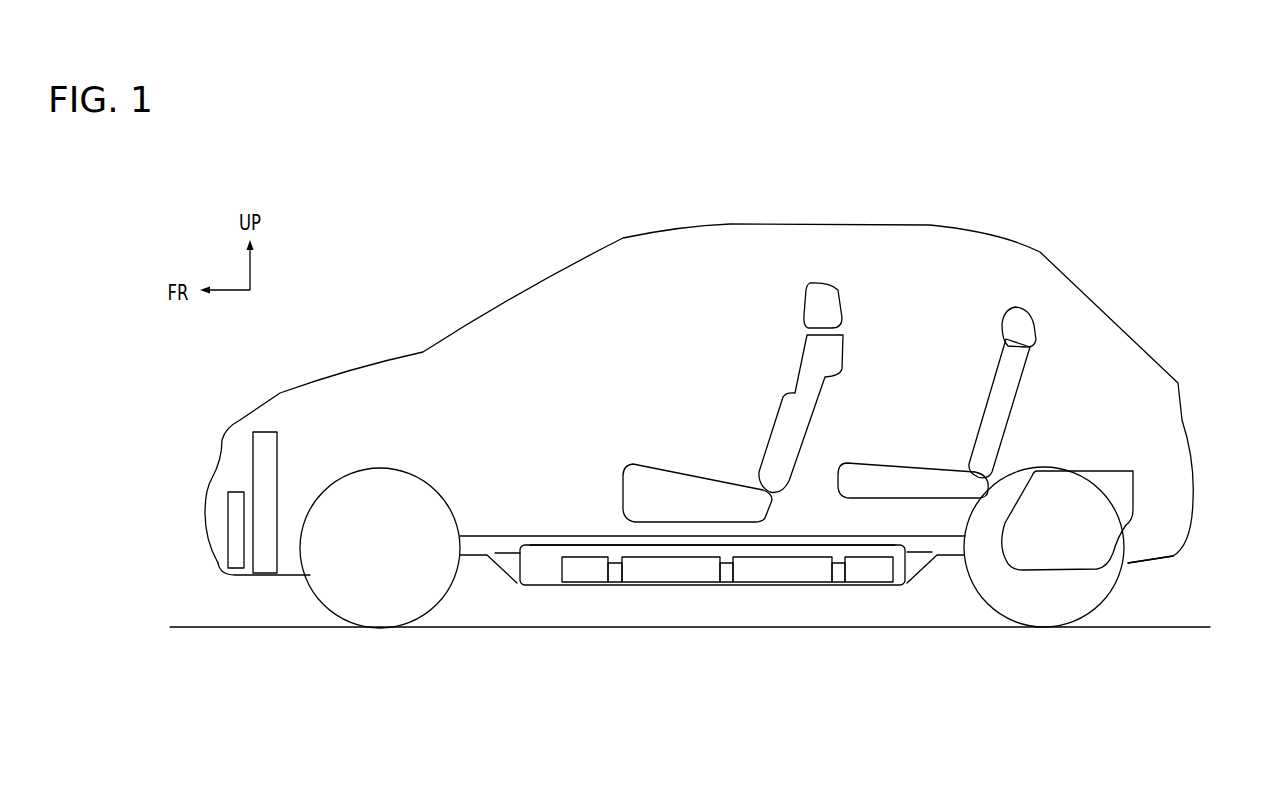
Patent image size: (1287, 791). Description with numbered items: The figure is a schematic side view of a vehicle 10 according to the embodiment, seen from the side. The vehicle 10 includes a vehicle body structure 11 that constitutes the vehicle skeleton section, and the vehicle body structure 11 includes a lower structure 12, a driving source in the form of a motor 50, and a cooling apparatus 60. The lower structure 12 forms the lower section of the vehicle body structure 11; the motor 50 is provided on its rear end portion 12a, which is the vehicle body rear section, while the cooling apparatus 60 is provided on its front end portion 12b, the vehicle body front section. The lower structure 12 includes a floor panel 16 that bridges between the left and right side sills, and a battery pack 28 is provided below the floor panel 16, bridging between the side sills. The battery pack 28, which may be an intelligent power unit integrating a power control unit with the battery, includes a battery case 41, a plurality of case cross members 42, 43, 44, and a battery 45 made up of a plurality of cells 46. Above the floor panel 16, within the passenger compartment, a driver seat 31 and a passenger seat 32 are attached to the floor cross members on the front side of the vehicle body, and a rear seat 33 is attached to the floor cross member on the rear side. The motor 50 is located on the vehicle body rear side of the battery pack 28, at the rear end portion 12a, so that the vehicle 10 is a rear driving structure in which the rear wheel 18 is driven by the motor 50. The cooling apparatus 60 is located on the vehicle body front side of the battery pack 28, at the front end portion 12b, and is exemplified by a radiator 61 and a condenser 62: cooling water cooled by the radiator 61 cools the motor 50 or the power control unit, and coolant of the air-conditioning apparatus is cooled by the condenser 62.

The vehicle 10 is at (699, 345).
The vehicle body structure 11 is at (622, 238).
The lower structure 12 is at (500, 577).
The rear end portion 12a is at (1140, 567).
The front end portion 12b is at (262, 578).
The floor panel 16 is at (492, 536).
The rear wheel 18 is at (1127, 543).
The battery pack 28 is at (547, 587).
The driver seat 31 is at (733, 333).
The passenger seat 32 is at (803, 297).
The rear seat 33 is at (1035, 318).
The battery case 41 is at (560, 545).
The case cross member 42 is at (613, 562).
The case cross member 43 is at (726, 563).
The case cross member 44 is at (840, 563).
The battery 45 is at (701, 550).
The cell 46 is at (822, 645).
The motor 50 is at (1117, 468).
The cooling apparatus 60 is at (182, 502).
The radiator 61 is at (253, 465).
The condenser 62 is at (191, 530).